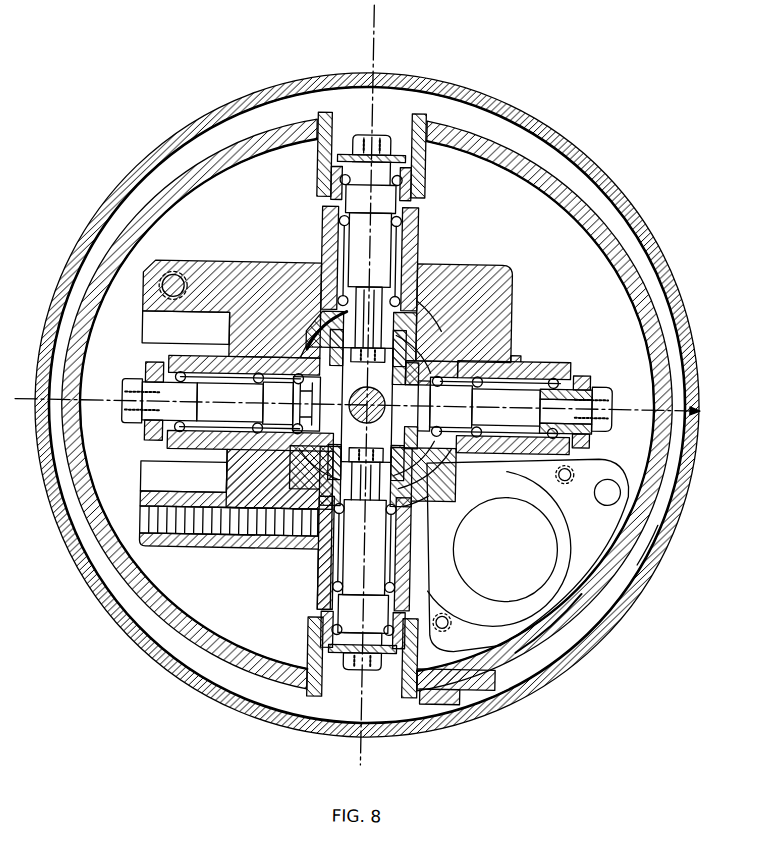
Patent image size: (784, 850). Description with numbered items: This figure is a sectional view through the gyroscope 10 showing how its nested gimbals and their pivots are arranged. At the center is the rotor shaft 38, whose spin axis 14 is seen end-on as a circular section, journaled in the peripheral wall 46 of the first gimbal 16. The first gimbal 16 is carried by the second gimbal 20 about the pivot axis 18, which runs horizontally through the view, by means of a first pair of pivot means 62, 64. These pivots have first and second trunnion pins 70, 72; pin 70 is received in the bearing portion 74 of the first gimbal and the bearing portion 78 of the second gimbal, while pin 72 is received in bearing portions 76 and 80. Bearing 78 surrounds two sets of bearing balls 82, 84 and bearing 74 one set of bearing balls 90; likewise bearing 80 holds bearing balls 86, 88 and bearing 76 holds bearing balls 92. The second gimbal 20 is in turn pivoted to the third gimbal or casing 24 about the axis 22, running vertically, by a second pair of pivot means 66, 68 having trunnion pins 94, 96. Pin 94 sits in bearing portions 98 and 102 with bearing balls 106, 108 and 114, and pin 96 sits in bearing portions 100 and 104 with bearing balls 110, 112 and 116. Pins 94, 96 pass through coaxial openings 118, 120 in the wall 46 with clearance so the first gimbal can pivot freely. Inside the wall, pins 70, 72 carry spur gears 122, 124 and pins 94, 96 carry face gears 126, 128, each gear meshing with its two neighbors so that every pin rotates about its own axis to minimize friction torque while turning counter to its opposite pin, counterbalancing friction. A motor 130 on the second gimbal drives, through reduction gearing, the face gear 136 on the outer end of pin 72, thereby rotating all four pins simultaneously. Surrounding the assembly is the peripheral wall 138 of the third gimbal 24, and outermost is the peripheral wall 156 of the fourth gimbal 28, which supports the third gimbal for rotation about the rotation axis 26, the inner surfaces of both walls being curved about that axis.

The gyroscope 10 is at (596, 138).
The spin axis 14 is at (366, 417).
The first gimbal 16 is at (306, 350).
The pivot axis 18 is at (702, 406).
The second gimbal 20 is at (477, 290).
The axis of second gimbal 22 is at (373, 40).
The third gimbal 24 is at (626, 623).
The rotation axis 26 is at (374, 427).
The fourth gimbal 28 is at (643, 593).
The shaft 38 is at (374, 392).
The peripheral wall 46 is at (413, 330).
The pivot means 62 is at (288, 411).
The pivot means 64 is at (443, 413).
The pivot means 66 is at (377, 209).
The pivot means 68 is at (378, 621).
The first trunnion pin 70 is at (238, 428).
The second trunnion pin 72 is at (500, 428).
The bearing portion 74 is at (300, 366).
The bearing portion 76 is at (440, 472).
The bearing portion 78 is at (205, 358).
The bearing portion 80 is at (532, 368).
The bearing balls 82 is at (182, 424).
The bearing balls 84 is at (256, 426).
The bearing balls 86 is at (478, 426).
The bearing balls 88 is at (576, 410).
The bearing balls 90 is at (292, 455).
The bearing balls 92 is at (412, 482).
The trunnion pin 94 is at (343, 262).
The trunnion pin 96 is at (342, 580).
The bearing portion 98 is at (322, 237).
The bearing portion 100 is at (318, 570).
The bearing portion 102 is at (316, 150).
The bearing portion 104 is at (322, 656).
The bearing balls 106 is at (335, 222).
The bearing balls 108 is at (370, 304).
The bearing balls 110 is at (343, 512).
The bearing balls 112 is at (344, 589).
The bearing balls 114 is at (336, 182).
The bearing balls 116 is at (334, 630).
The opening 118 is at (332, 320).
The opening 120 is at (321, 492).
The spur gear 122 is at (312, 472).
The spur gear 124 is at (430, 358).
The face gear 126 is at (425, 298).
The face gear 128 is at (415, 490).
The motor 130 is at (509, 570).
The face gear 136 is at (585, 372).
The peripheral wall 138 is at (579, 641).
The peripheral wall 156 is at (675, 576).